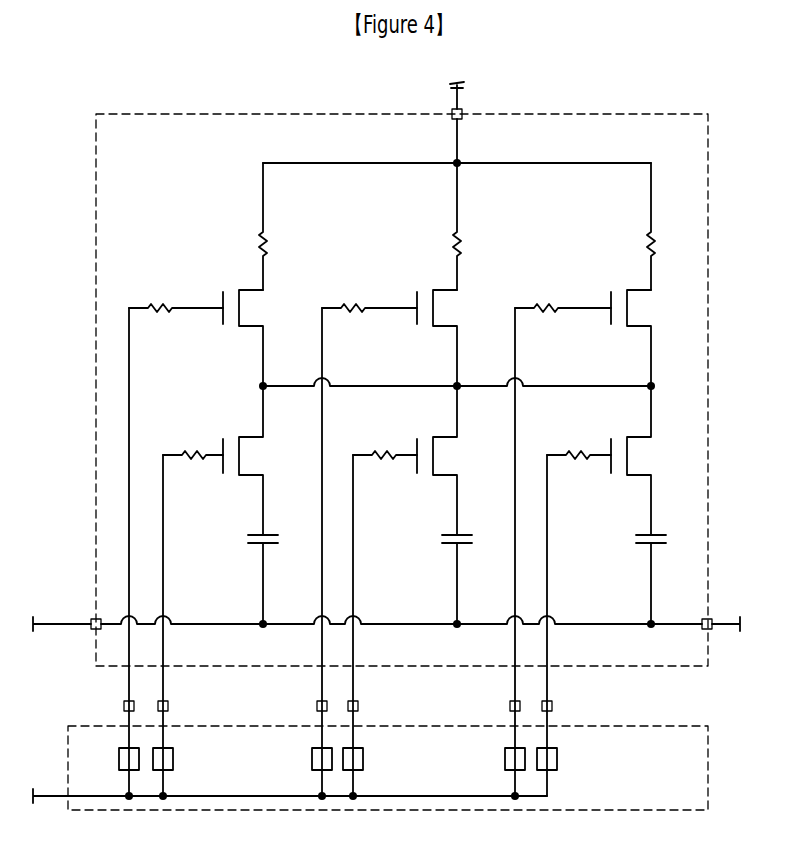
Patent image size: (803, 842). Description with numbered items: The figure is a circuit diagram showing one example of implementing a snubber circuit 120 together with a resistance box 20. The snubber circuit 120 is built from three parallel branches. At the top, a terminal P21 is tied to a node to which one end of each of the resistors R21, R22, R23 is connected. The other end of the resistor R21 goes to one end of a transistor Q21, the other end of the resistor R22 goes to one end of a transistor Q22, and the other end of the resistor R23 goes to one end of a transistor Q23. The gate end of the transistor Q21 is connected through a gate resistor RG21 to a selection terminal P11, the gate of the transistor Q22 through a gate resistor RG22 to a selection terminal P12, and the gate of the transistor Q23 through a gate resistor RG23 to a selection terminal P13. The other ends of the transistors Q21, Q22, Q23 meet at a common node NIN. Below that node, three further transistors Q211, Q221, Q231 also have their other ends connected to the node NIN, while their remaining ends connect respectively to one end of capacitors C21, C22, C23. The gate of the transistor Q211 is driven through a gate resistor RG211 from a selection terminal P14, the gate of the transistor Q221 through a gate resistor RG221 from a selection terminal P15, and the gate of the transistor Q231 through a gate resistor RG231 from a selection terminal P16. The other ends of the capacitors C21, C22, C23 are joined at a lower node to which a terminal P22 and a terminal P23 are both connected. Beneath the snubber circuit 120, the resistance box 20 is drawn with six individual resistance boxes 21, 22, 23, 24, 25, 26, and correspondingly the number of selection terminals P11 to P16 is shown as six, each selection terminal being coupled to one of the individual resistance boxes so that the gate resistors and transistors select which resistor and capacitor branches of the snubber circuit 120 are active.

The snubber circuit 120 is at (708, 130).
The resistance box 20 is at (708, 740).
The individual resistance box 21 is at (119, 759).
The individual resistance box 22 is at (312, 759).
The individual resistance box 23 is at (505, 759).
The individual resistance box 24 is at (173, 759).
The individual resistance box 25 is at (363, 759).
The individual resistance box 26 is at (557, 759).
The terminal P21 is at (473, 122).
The terminal P22 is at (67, 608).
The terminal P23 is at (706, 610).
The selection terminal P11 is at (115, 693).
The selection terminal P12 is at (306, 693).
The selection terminal P13 is at (499, 693).
The selection terminal P14 is at (177, 693).
The selection terminal P15 is at (367, 693).
The selection terminal P16 is at (562, 693).
The resistor R21 is at (279, 226).
The resistor R22 is at (473, 226).
The resistor R23 is at (667, 226).
The gate resistor RG21 is at (176, 294).
The gate resistor RG22 is at (369, 294).
The gate resistor RG23 is at (563, 294).
The gate resistor RG211 is at (193, 442).
The gate resistor RG221 is at (385, 442).
The gate resistor RG231 is at (579, 442).
The transistor Q21 is at (243, 338).
The transistor Q22 is at (437, 338).
The transistor Q23 is at (631, 338).
The transistor Q211 is at (253, 460).
The transistor Q221 is at (447, 460).
The transistor Q231 is at (641, 460).
The capacitor C21 is at (278, 575).
The capacitor C22 is at (472, 575).
The capacitor C23 is at (666, 575).
The node NIN is at (457, 374).